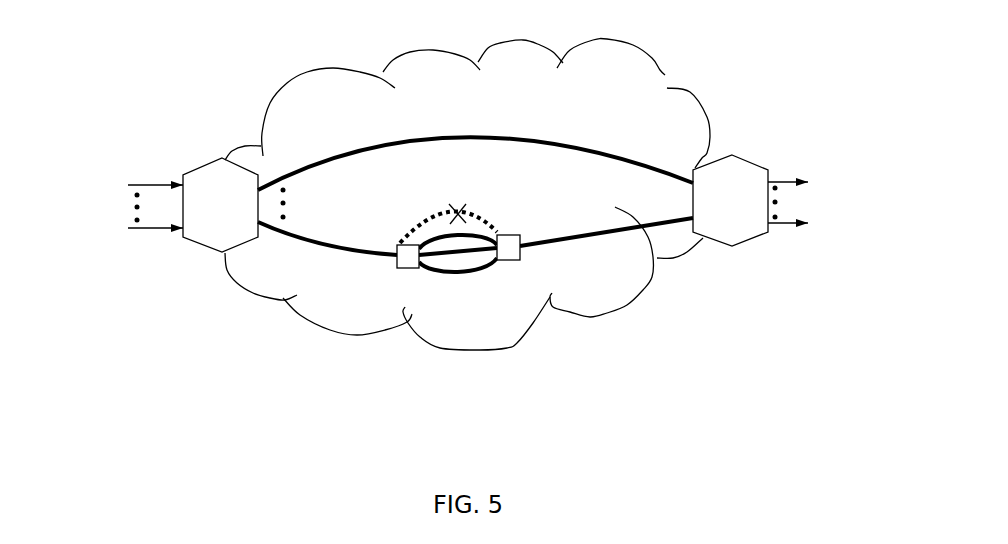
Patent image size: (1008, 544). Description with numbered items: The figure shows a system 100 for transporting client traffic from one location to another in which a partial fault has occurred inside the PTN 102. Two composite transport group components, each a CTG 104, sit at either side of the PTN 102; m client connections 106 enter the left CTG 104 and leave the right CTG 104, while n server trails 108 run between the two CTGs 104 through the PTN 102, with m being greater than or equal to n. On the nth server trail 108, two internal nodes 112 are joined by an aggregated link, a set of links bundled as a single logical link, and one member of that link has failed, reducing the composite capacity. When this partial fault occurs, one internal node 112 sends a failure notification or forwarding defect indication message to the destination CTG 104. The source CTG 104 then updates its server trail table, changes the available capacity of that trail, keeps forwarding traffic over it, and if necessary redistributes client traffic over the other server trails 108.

The system 100 is at (237, 332).
The PTN 102 is at (288, 88).
The composite transport group (CTG) component 104 is at (732, 155).
The client connections 106 is at (135, 183).
The server trails 108 is at (548, 147).
The internal nodes 112 is at (400, 268).